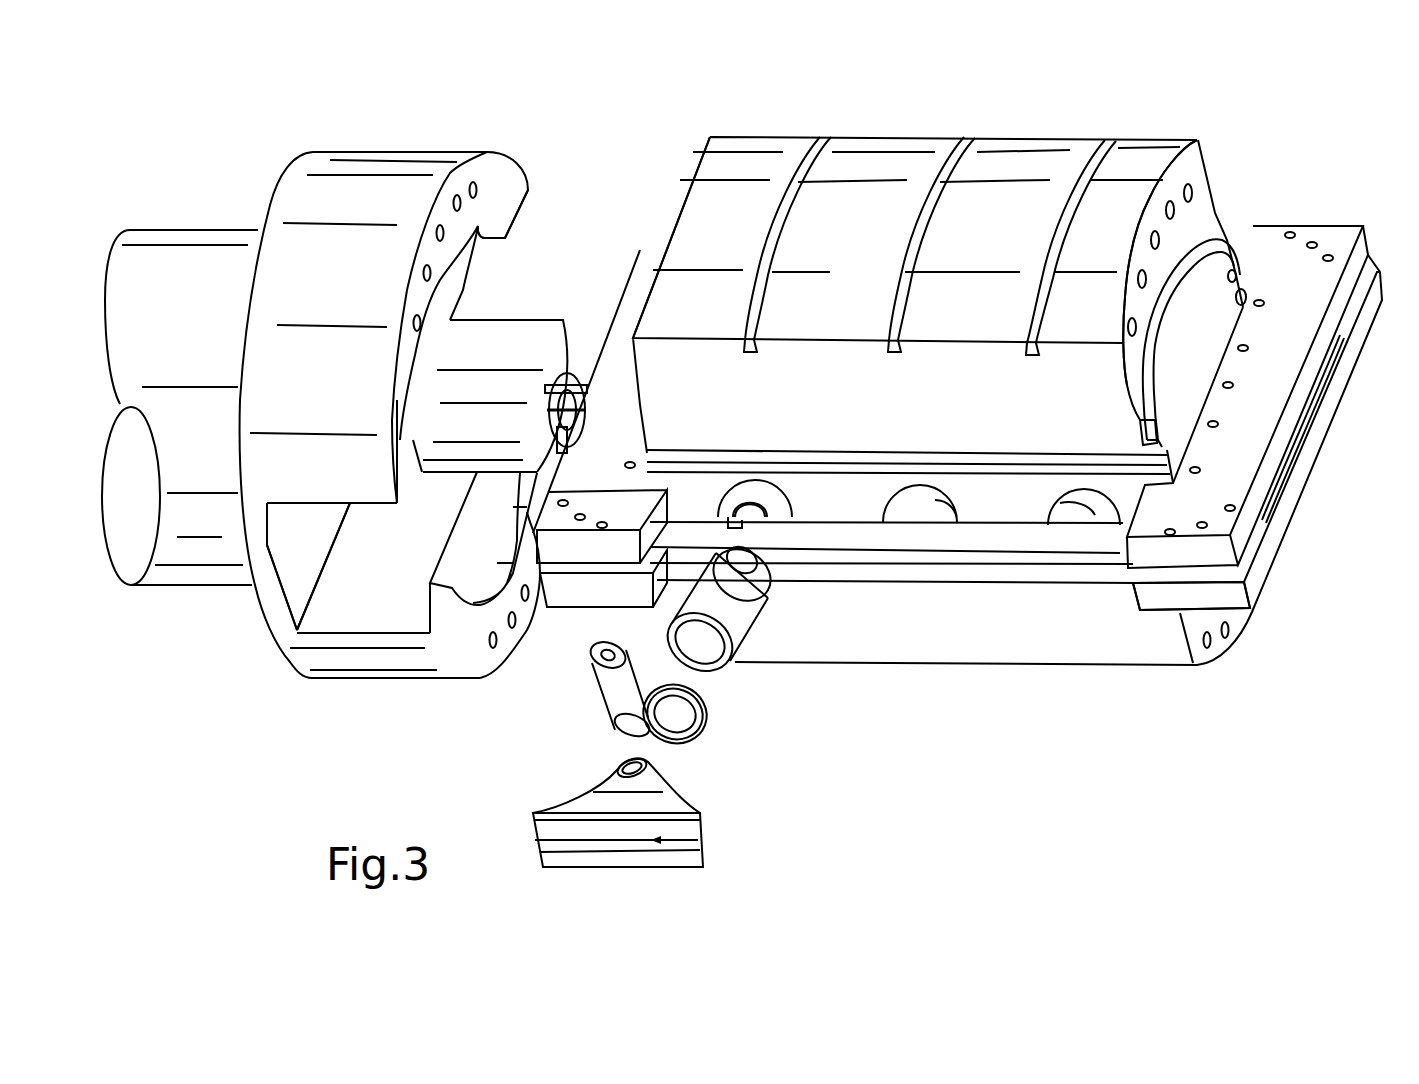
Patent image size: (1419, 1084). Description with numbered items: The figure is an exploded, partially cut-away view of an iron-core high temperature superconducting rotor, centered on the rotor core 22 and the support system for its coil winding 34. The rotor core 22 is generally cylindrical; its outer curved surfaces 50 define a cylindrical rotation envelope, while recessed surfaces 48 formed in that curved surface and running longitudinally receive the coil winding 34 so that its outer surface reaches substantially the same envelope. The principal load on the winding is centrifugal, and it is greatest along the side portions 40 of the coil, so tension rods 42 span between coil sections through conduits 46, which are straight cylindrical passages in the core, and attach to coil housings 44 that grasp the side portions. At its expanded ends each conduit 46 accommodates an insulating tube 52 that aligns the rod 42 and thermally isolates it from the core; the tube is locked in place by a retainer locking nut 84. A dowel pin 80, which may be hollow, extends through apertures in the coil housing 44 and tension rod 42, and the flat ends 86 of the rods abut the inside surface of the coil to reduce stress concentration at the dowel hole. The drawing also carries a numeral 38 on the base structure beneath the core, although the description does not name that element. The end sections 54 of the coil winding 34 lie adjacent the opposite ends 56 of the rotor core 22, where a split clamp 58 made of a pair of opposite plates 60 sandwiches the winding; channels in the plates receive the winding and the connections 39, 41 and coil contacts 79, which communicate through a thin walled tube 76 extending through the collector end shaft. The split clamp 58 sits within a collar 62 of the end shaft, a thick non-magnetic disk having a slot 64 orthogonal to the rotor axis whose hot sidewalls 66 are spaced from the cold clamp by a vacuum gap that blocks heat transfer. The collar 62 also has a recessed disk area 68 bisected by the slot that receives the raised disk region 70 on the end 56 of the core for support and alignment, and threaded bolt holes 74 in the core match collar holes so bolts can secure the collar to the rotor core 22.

The rotor core 22 is at (960, 312).
The coil winding 34 is at (1047, 540).
The base plate 38 is at (1053, 573).
The connection 39 is at (557, 380).
The side portions 40 is at (902, 583).
The connection 41 is at (581, 353).
The tension rod 42 is at (757, 517).
The coil housing 44 is at (703, 847).
The conduit 46 is at (930, 512).
The recessed surface 48 is at (856, 411).
The outer curved surface 50 is at (839, 296).
The insulating tube 52 is at (707, 677).
The end section 54 is at (1267, 530).
The end of rotor core 56 is at (680, 188).
The split clamp 58 is at (560, 600).
The plate 60 is at (1290, 240).
The collar 62 is at (372, 157).
The slot 64 is at (297, 567).
The sidewall 66 is at (327, 513).
The recessed disk area 68 is at (480, 250).
The raised disk region 70 is at (1207, 253).
The threaded bolt hole 74 is at (1197, 205).
The thin walled tube 76 is at (490, 390).
The coil contact 79 is at (582, 383).
The dowel pin 80 is at (597, 695).
The retainer locking nut 84 is at (695, 740).
The flat end 86 is at (733, 567).